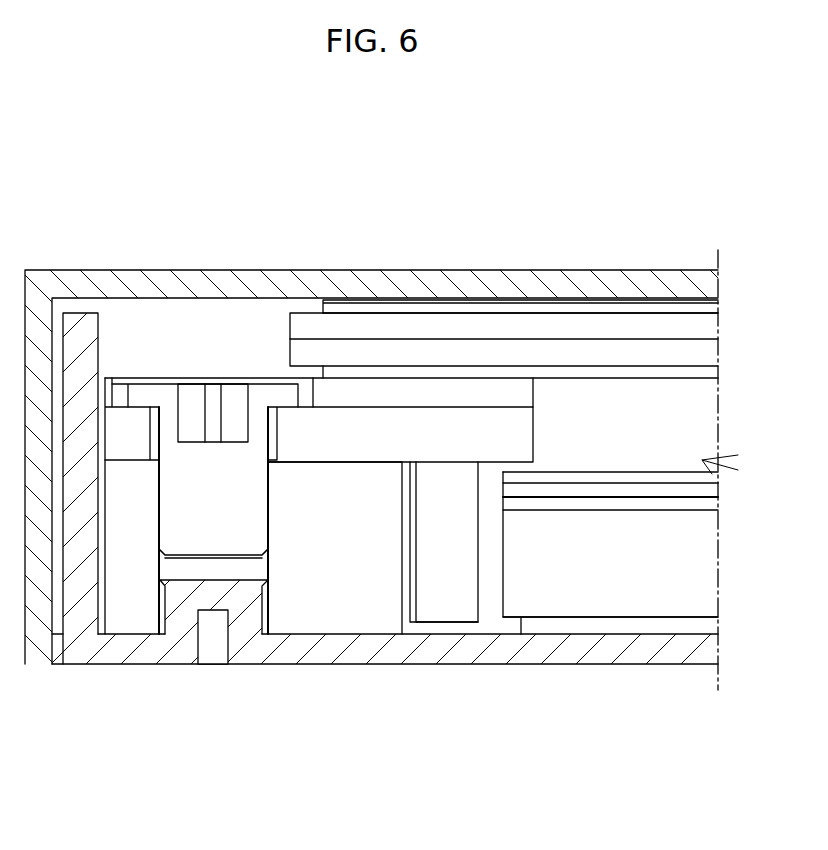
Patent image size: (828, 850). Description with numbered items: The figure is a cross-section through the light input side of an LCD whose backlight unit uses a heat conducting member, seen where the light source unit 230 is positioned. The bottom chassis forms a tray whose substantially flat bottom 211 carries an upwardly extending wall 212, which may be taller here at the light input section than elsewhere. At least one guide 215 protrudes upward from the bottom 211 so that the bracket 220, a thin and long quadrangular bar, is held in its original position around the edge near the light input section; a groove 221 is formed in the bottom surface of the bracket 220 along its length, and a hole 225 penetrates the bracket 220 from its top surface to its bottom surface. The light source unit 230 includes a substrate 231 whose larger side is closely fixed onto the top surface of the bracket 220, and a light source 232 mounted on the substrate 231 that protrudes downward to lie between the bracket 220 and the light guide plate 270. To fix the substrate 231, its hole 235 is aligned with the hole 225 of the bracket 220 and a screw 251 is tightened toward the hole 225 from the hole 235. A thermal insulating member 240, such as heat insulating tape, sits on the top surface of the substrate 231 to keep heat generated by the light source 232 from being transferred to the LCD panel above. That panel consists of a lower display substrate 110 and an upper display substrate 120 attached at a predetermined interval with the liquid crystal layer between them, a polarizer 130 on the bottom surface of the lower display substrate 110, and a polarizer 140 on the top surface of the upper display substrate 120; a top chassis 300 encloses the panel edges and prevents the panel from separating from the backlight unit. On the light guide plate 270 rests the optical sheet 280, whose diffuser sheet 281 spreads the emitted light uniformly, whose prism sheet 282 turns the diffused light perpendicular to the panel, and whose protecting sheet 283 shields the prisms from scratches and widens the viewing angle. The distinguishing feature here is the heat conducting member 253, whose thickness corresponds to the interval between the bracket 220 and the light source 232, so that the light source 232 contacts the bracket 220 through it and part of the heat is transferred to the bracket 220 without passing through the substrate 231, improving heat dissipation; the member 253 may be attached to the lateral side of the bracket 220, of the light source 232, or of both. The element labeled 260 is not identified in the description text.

The wall 212 is at (96, 363).
The hole 235 is at (153, 430).
The screw 251 is at (260, 393).
The thermal insulating member 240 is at (353, 390).
The top chassis 300 is at (432, 280).
The polarizer 140 is at (490, 307).
The upper display substrate 120 is at (549, 323).
The lower display substrate 110 is at (600, 347).
The polarizer 130 is at (650, 370).
The hole 225 is at (160, 494).
The groove 221 is at (144, 472).
The guide 215 is at (248, 600).
The bracket 220 is at (350, 600).
The light source 232 is at (438, 600).
The substrate 231 is at (452, 440).
The light source unit 230 is at (400, 592).
The protecting sheet 283 is at (525, 478).
The prism sheet 282 is at (557, 492).
The diffuser sheet 281 is at (595, 503).
The optical sheet 280 is at (610, 641).
The battery body 260 is at (683, 630).
The light guide plate 270 is at (643, 603).
The bottom 211 is at (308, 655).
The heat conducting member 253 is at (410, 617).